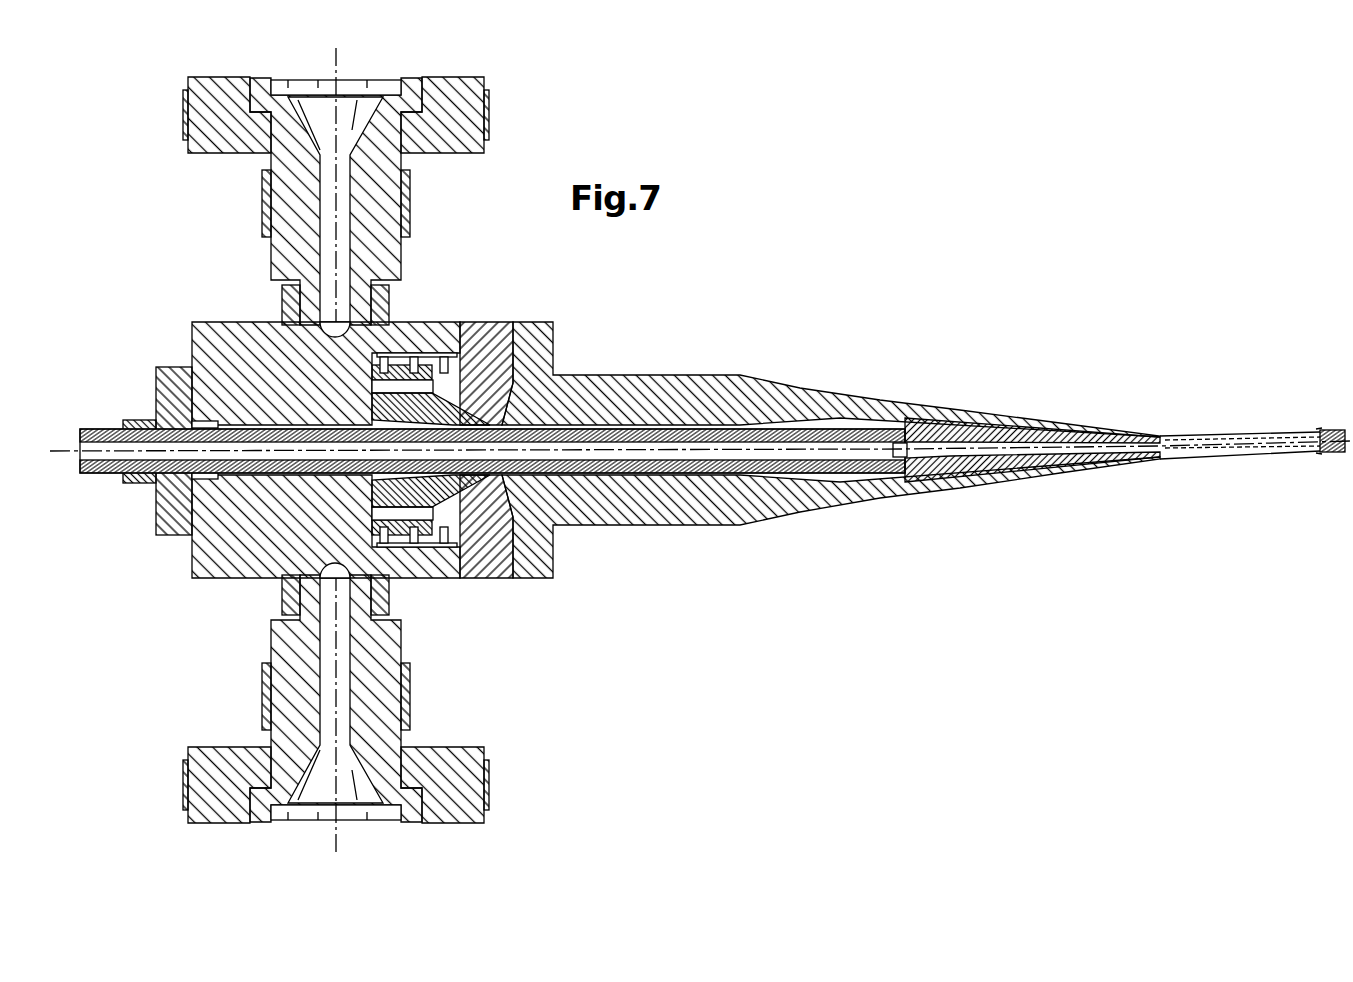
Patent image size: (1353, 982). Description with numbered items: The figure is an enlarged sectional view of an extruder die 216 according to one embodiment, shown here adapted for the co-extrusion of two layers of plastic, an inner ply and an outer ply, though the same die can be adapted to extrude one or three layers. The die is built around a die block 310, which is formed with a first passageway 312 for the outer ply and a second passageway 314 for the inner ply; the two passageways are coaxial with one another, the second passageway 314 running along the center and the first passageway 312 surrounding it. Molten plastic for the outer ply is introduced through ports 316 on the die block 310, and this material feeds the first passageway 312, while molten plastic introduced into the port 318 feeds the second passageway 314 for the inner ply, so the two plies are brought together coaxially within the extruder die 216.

The extruder die 216 is at (885, 308).
The die block 310 is at (642, 362).
The first passageway 312 is at (753, 427).
The second passageway 314 is at (682, 452).
The ports 316 is at (378, 82).
The port 318 is at (78, 462).